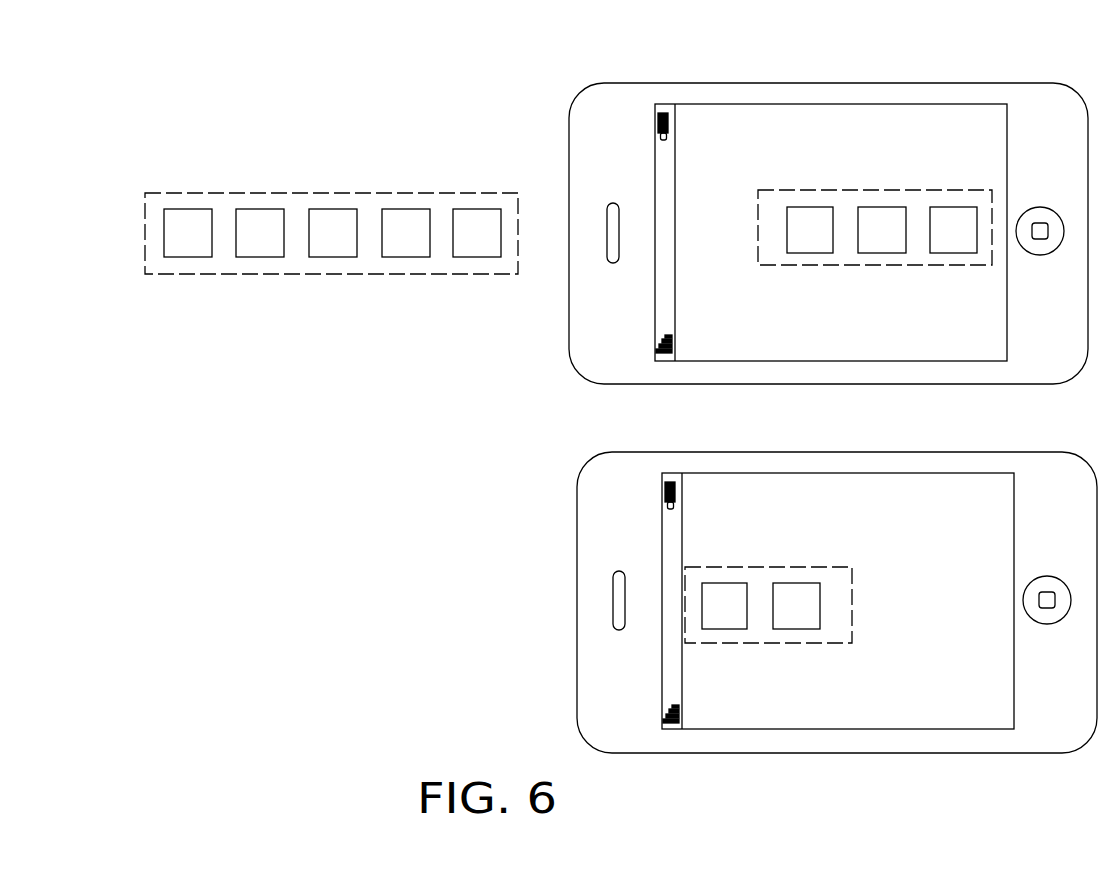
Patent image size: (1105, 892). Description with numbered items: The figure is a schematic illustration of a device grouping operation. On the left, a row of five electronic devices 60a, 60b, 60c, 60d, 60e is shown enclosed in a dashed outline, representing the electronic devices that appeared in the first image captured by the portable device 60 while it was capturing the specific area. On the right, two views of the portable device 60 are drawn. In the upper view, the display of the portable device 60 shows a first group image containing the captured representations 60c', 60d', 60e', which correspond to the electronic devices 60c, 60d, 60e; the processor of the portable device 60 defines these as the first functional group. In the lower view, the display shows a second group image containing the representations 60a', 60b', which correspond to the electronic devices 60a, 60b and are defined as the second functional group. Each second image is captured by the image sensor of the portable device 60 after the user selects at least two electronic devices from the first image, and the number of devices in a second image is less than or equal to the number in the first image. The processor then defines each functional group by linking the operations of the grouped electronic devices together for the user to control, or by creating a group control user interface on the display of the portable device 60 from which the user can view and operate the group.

The portable device 60 is at (594, 332).
The electronic device 60a is at (155, 206).
The electronic device 60b is at (241, 204).
The electronic device 60c is at (308, 193).
The electronic device 60d is at (399, 185).
The electronic device 60e is at (468, 195).
The image of electronic device in second group image 60a' is at (680, 522).
The image of electronic device in second group image 60b' is at (839, 522).
The image of electronic device in first group image 60c' is at (753, 148).
The image of electronic device in first group image 60d' is at (853, 144).
The image of electronic device in first group image 60e' is at (994, 147).